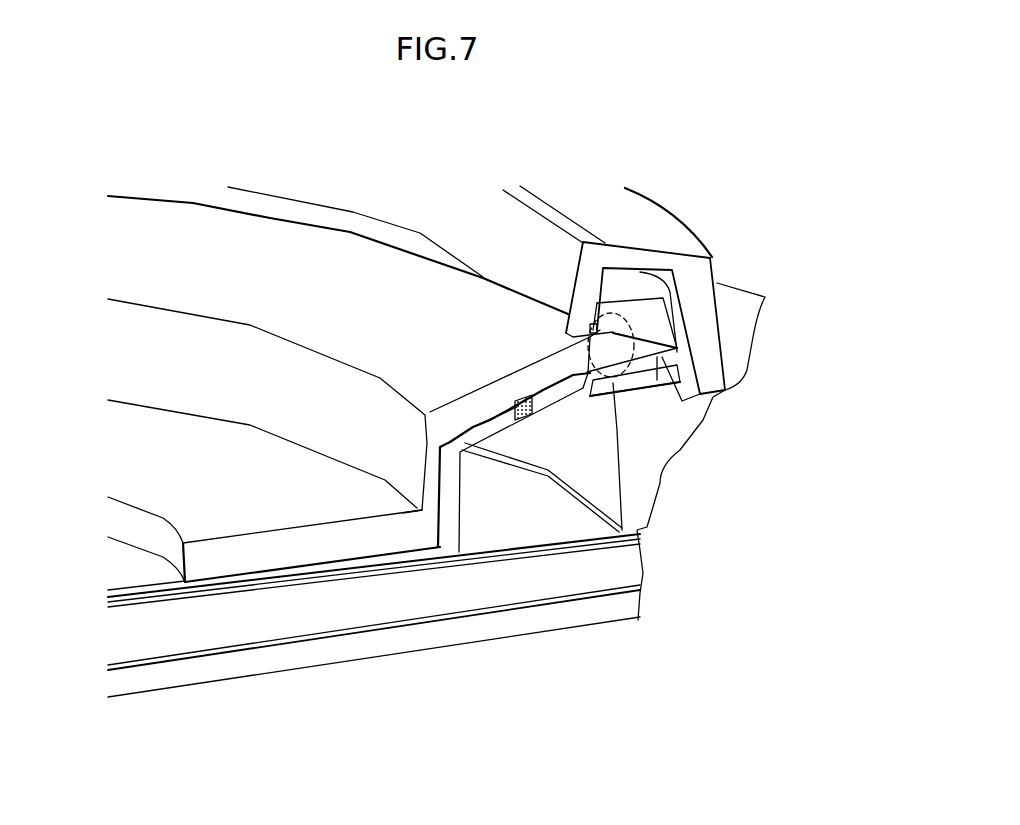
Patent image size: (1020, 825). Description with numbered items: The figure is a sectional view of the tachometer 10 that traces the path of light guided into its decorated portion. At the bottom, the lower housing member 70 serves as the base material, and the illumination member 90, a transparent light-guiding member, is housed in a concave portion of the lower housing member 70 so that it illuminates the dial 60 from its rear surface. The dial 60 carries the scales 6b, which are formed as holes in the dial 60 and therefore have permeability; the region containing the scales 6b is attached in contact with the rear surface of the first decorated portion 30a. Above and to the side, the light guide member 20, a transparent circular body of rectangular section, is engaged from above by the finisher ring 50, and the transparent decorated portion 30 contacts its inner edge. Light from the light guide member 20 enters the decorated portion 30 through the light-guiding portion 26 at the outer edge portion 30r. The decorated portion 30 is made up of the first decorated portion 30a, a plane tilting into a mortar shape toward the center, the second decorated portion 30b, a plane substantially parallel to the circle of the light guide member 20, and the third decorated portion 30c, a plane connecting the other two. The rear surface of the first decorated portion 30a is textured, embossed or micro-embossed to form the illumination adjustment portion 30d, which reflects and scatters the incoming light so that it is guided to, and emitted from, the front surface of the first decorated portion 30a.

The tachometer 10 is at (643, 173).
The scales 6b is at (523, 403).
The light-guiding portion 26 is at (635, 327).
The finisher ring 50 is at (683, 225).
The light guide member 20 is at (670, 328).
The decorated portion 30 is at (374, 542).
The first decorated portion 30a is at (450, 418).
The second decorated portion 30b is at (274, 607).
The third decorated portion 30c is at (437, 460).
The illumination adjustment portion 30d is at (545, 385).
The outer edge portion 30r is at (587, 373).
The dial 60 is at (200, 583).
The lower housing member 70 is at (253, 662).
The illumination member 90 is at (305, 607).